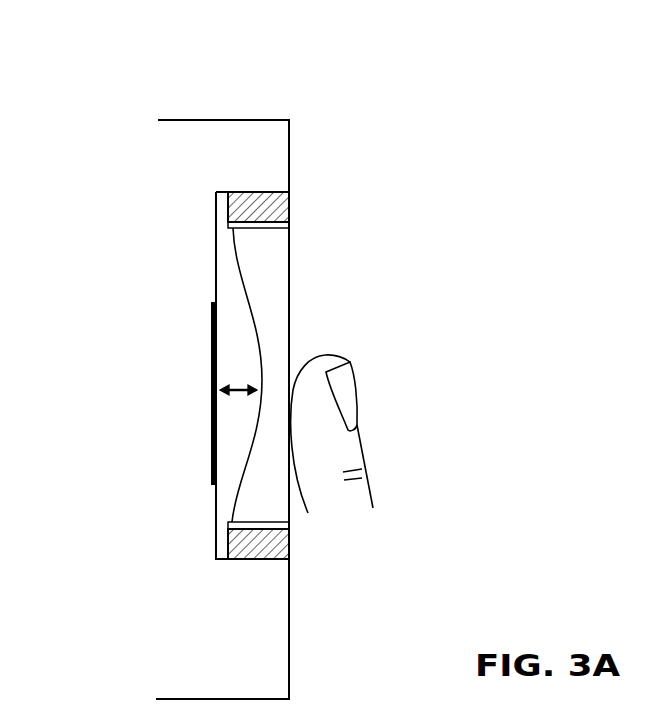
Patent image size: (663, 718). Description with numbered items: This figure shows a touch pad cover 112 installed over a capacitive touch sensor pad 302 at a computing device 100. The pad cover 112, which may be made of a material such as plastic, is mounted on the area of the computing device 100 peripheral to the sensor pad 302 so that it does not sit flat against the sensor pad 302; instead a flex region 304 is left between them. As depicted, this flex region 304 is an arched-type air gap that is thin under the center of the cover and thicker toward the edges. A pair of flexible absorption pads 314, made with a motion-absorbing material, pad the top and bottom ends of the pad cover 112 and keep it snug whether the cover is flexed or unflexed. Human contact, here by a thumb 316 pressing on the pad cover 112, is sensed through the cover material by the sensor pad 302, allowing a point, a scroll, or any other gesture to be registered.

The computing device 100 is at (220, 143).
The flexible absorption pads 314 is at (387, 206).
The touch pad cover 112 is at (275, 289).
The capacitive touch sensor pad 302 is at (198, 480).
The flex region 304 is at (237, 452).
The human thumb 316 is at (355, 449).